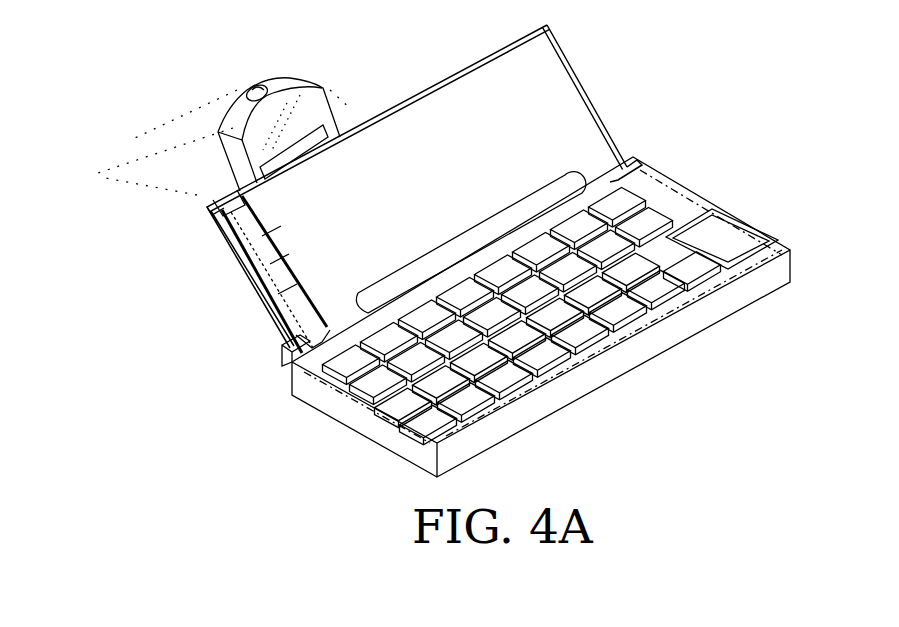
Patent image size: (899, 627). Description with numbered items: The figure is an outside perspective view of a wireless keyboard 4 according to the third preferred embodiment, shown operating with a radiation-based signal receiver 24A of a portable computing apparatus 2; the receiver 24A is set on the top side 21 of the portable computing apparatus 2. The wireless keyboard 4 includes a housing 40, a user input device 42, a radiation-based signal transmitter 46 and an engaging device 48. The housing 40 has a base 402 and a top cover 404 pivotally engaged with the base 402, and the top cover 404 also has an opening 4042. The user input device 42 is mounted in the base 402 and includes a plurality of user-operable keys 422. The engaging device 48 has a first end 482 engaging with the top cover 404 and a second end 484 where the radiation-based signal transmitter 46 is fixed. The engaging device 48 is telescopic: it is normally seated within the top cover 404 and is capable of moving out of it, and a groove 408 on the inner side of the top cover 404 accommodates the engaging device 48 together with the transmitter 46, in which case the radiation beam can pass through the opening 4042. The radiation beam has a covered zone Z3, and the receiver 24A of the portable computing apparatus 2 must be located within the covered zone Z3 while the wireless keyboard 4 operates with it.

The portable computing apparatus 2 is at (354, 108).
The top side 21 is at (273, 87).
The radiation-based signal receiver 24A is at (255, 90).
The covered zone Z3 is at (112, 158).
The wireless keyboard 4 is at (658, 158).
The housing 40 is at (170, 380).
The base 402 is at (345, 410).
The top cover 404 is at (287, 373).
The opening 4042 is at (212, 204).
The radiation-based signal transmitter 46 is at (218, 223).
The second end 484 is at (228, 237).
The engaging device 48 is at (278, 268).
The groove 408 is at (283, 295).
The first end 482 is at (300, 337).
The user input device 42 is at (725, 206).
The user-operable keys 422 is at (612, 248).